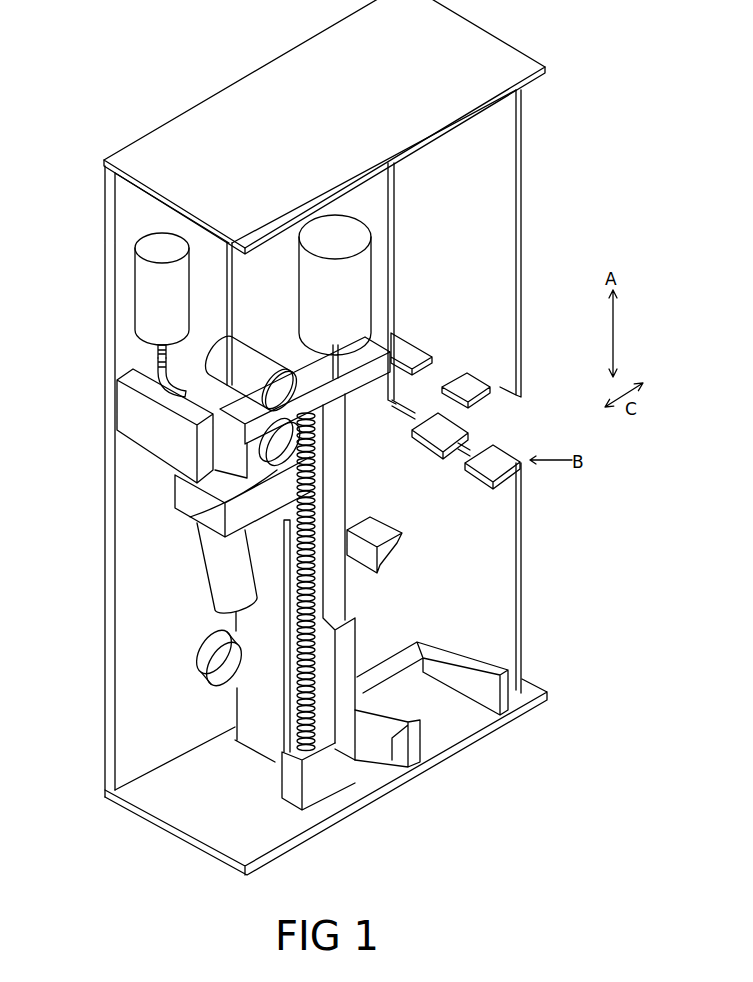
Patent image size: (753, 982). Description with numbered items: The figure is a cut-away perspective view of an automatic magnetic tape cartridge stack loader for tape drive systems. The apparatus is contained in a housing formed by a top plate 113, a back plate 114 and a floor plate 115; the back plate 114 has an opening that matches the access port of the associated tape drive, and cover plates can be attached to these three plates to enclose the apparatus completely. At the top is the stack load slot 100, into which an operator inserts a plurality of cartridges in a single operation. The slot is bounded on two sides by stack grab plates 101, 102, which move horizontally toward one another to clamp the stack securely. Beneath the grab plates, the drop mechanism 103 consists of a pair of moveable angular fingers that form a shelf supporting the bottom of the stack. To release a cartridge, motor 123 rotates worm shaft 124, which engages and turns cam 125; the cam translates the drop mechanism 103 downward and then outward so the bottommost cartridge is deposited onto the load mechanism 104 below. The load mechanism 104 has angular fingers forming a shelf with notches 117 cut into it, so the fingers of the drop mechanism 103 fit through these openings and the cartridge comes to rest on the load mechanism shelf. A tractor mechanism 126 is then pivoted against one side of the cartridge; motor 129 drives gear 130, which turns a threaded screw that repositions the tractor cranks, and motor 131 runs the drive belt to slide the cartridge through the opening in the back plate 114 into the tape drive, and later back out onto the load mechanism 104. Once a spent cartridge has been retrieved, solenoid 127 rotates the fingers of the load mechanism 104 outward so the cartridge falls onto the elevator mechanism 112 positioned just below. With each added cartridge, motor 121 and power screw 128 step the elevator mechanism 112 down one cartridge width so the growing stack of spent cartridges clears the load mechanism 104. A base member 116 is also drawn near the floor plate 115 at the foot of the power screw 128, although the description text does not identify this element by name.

The stack load slot 100 is at (450, 217).
The stack grab plate 101 is at (392, 263).
The stack grab plate 102 is at (521, 284).
The drop mechanism 103 is at (470, 372).
The load mechanism 104 is at (402, 533).
The elevator mechanism 112 is at (473, 655).
The top plate 113 is at (262, 107).
The back plate 114 is at (110, 360).
The floor plate 115 is at (166, 831).
The base support bar 116 is at (332, 773).
The notches 117 is at (470, 446).
The motor 121 is at (372, 292).
The motor 123 is at (133, 273).
The worm shaft 124 is at (160, 350).
The cam 125 is at (163, 365).
The tractor mechanism 126 is at (118, 405).
The solenoid 127 is at (187, 648).
The power screw 128 is at (313, 585).
The motor 129 is at (272, 358).
The gear 130 is at (190, 517).
The motor 131 is at (207, 577).